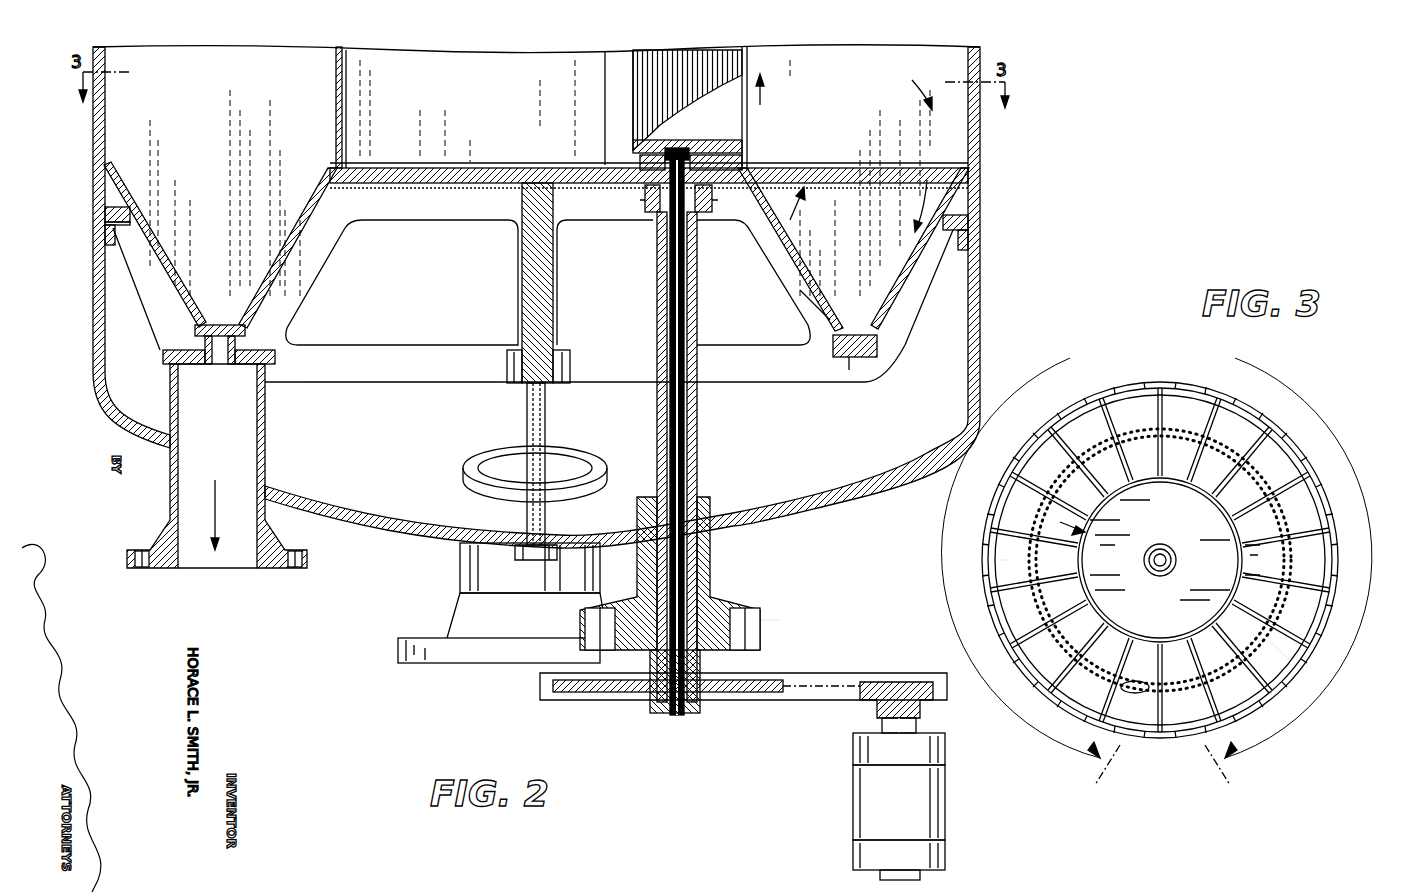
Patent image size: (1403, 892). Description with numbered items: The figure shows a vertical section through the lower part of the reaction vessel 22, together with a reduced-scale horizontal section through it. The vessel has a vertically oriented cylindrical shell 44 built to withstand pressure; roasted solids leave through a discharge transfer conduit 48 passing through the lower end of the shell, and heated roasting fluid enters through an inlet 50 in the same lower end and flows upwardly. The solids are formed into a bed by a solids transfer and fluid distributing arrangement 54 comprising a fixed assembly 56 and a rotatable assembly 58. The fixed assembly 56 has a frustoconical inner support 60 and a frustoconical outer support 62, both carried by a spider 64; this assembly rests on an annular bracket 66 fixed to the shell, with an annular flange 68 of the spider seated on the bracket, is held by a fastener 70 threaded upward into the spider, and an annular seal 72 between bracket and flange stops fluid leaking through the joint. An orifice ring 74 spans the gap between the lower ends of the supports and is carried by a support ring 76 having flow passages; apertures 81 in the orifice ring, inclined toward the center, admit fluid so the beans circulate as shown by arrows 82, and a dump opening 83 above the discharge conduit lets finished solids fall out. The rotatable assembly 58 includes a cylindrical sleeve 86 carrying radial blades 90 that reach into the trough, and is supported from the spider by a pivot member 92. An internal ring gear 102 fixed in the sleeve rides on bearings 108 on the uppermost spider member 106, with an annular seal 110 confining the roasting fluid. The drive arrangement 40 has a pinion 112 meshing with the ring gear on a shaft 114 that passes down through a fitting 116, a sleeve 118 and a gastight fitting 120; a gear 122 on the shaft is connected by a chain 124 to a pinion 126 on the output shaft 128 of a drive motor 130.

In FIG. 2, the reaction vessel 22 is at (1000, 190).
In FIG. 3, the reaction vessel 22 is at (978, 546).
In FIG. 2, the drive arrangement 40 is at (772, 636).
In FIG. 2, the cylindrical shell 44 is at (980, 262).
In FIG. 3, the cylindrical shell 44 is at (1258, 420).
In FIG. 2, the discharge transfer conduit 48 is at (265, 442).
In FIG. 2, the inlet 50 is at (460, 566).
In FIG. 2, the solids transfer and fluid distributing arrangement 54 is at (185, 47).
In FIG. 2, the fixed assembly 56 is at (134, 318).
In FIG. 2, the rotatable assembly 58 is at (400, 47).
In FIG. 3, the rotatable assembly 58 is at (1045, 528).
In FIG. 2, the inner support 60 is at (300, 245).
In FIG. 3, the inner support 60 is at (1080, 560).
In FIG. 2, the outer support 62 is at (155, 273).
In FIG. 3, the outer support 62 is at (1000, 568).
In FIG. 2, the spider 64 is at (405, 385).
In FIG. 2, the annular bracket 66 is at (105, 240).
In FIG. 2, the annular flange 68 is at (105, 212).
In FIG. 2, the fastener 70 is at (527, 418).
In FIG. 2, the annular seal 72 is at (105, 224).
In FIG. 2, the orifice ring 74 is at (852, 327).
In FIG. 3, the orifice ring 74 is at (1030, 612).
In FIG. 2, the support ring 76 is at (833, 348).
In FIG. 2, the apertures 81 is at (851, 358).
In FIG. 3, the apertures 81 is at (1068, 645).
In FIG. 2, the arrows 82 is at (765, 128).
In FIG. 2, the dump opening 83 is at (218, 358).
In FIG. 3, the dump opening 83 is at (1138, 692).
In FIG. 2, the sleeve 86 is at (336, 66).
In FIG. 3, the sleeve 86 is at (1245, 562).
In FIG. 2, the radial blades 90 is at (96, 165).
In FIG. 3, the radial blades 90 is at (1290, 655).
In FIG. 2, the pivot member 92 is at (527, 170).
In FIG. 3, the pivot member 92 is at (1160, 544).
In FIG. 2, the internal ring gear 102 is at (633, 148).
In FIG. 2, the uppermost spider member 106 is at (440, 195).
In FIG. 2, the bearings 108 is at (368, 163).
In FIG. 2, the annular seal 110 is at (350, 168).
In FIG. 2, the pinion 112 is at (668, 150).
In FIG. 2, the shaft 114 is at (670, 297).
In FIG. 2, the fitting 116 is at (704, 208).
In FIG. 2, the sleeve 118 is at (657, 275).
In FIG. 2, the gastight fitting 120 is at (712, 548).
In FIG. 2, the gear 122 is at (617, 700).
In FIG. 2, the chain 124 is at (808, 700).
In FIG. 2, the pinion 126 is at (880, 682).
In FIG. 2, the output shaft 128 is at (898, 690).
In FIG. 2, the drive motor 130 is at (853, 778).